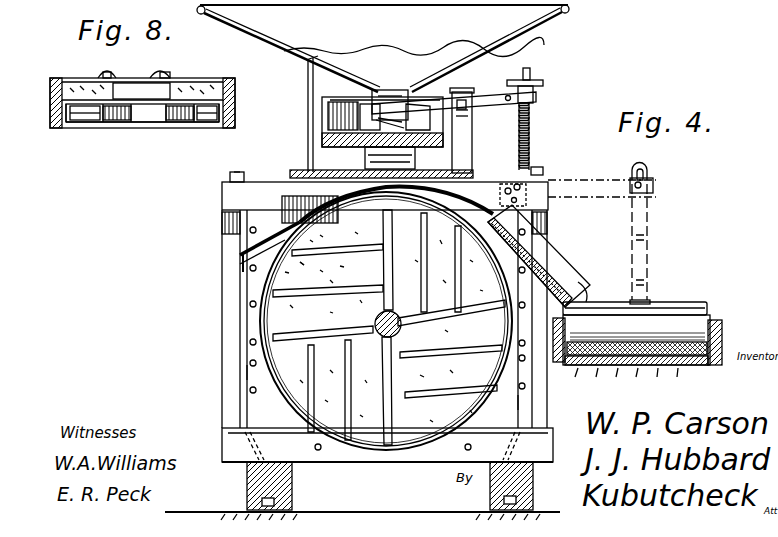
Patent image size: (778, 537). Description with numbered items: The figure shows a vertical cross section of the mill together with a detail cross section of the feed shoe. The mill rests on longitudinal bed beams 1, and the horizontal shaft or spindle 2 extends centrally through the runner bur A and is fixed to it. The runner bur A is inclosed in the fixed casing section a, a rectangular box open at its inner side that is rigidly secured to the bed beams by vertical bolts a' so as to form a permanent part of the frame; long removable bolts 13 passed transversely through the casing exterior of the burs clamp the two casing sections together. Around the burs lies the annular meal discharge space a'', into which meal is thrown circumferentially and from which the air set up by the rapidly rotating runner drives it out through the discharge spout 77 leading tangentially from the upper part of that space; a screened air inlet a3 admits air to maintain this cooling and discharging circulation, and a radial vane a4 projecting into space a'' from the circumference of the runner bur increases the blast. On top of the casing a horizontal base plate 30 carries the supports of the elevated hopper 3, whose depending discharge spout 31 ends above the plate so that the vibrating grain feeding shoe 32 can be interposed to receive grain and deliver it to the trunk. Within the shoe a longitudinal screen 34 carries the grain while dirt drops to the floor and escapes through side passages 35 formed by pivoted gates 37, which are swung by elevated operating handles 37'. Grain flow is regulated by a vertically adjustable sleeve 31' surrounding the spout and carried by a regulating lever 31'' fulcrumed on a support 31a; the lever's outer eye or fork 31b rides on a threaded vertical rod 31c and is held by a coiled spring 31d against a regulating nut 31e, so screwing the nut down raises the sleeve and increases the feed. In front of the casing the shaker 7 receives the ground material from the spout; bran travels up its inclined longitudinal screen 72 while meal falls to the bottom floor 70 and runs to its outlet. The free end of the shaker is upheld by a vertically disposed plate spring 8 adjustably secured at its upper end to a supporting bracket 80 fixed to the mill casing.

In FIG. 4, the elevated hopper 3 is at (383, 48).
In FIG. 4, the depending discharge spout 31 is at (390, 95).
In FIG. 4, the vertically adjustable sleeve 31' is at (440, 127).
In FIG. 4, the regulating lever 31'' is at (454, 87).
In FIG. 4, the support 31a is at (470, 148).
In FIG. 4, the eye or fork 31b is at (536, 97).
In FIG. 4, the threaded vertical rod or post 31c is at (531, 70).
In FIG. 4, the coiled spring 31d is at (532, 150).
In FIG. 4, the regulating nut 31e is at (543, 82).
In FIG. 8, the vibrating grain feeding shoe 32 is at (222, 100).
In FIG. 4, the vibrating grain feeding shoe 32 is at (382, 131).
In FIG. 4, the longitudinal screen 34 is at (368, 140).
In FIG. 4, the base plate 30 is at (308, 166).
In FIG. 8, the side passages 35 is at (86, 115).
In FIG. 8, the pivoted gates 37 is at (142, 133).
In FIG. 8, the operating handles or levers 37' is at (147, 59).
In FIG. 4, the supporting bracket 80 is at (578, 202).
In FIG. 4, the plate spring 8 is at (648, 238).
In FIG. 4, the discharge chute 77 is at (565, 270).
In FIG. 4, the shaker 7 is at (722, 341).
In FIG. 4, the longitudinal screen 72 is at (660, 345).
In FIG. 4, the bottom floor 70 is at (636, 372).
In FIG. 4, the shaft or spindle 2 is at (386, 321).
In FIG. 4, the runner bur A is at (313, 261).
In FIG. 4, the fixed casing section a is at (387, 329).
In FIG. 4, the vertical bolts a' is at (387, 383).
In FIG. 4, the annular meal discharge space a'' is at (396, 215).
In FIG. 4, the screened air inlet a3 is at (236, 258).
In FIG. 4, the radial vane a4 is at (387, 474).
In FIG. 4, the removable bolts 13 is at (250, 390).
In FIG. 4, the longitudinal bed beams 1 is at (293, 490).